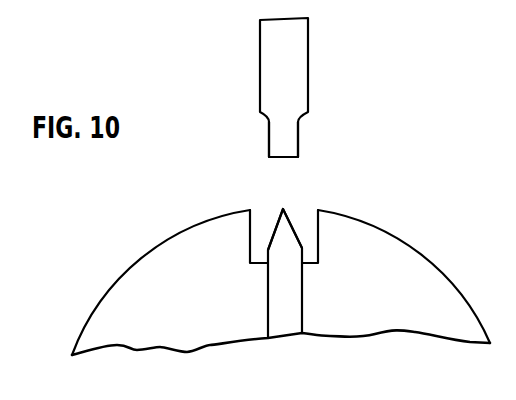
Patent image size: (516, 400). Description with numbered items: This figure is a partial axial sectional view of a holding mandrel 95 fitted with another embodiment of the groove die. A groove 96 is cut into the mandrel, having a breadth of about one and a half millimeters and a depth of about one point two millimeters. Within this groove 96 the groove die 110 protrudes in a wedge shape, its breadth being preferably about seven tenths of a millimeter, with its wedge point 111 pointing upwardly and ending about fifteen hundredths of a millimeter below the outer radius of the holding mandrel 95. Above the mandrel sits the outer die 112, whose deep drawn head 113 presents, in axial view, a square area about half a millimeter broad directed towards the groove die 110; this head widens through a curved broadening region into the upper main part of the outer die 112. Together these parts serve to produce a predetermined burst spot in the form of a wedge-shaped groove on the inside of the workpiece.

The holding mandrel 95 is at (412, 268).
The groove 96 is at (260, 241).
The groove die 110 is at (290, 286).
The wedge point 111 is at (285, 227).
The outer die 112 is at (295, 63).
The deep drawn head 113 is at (288, 143).